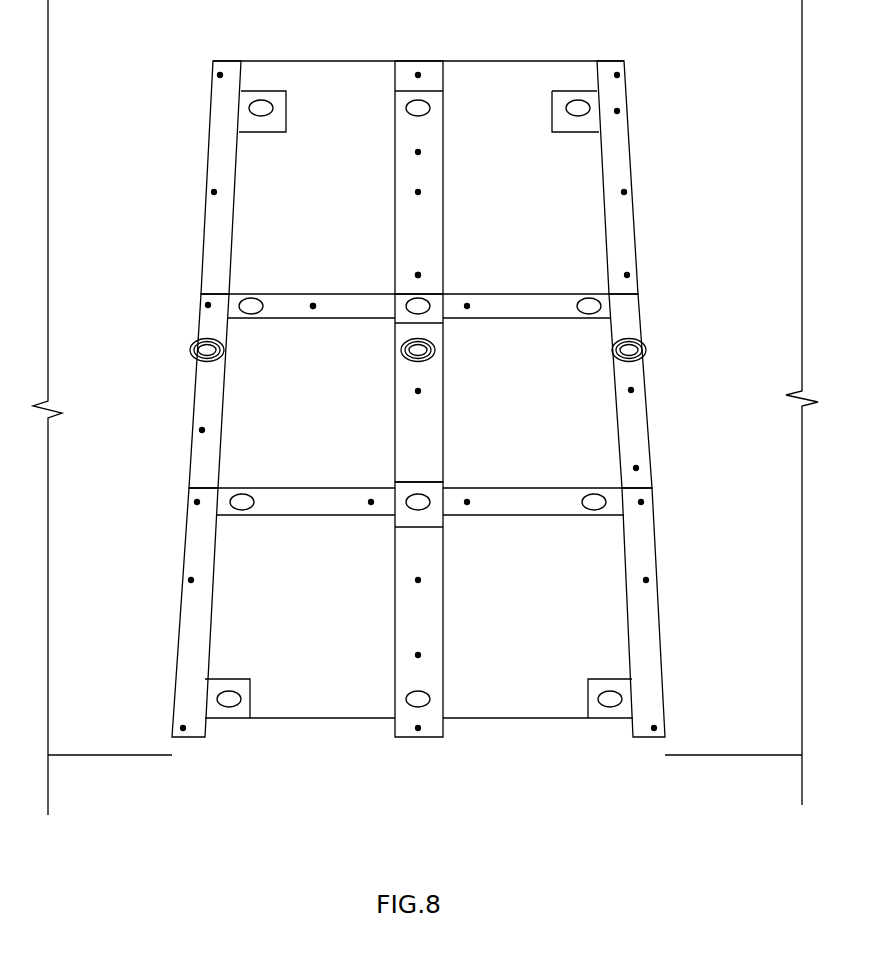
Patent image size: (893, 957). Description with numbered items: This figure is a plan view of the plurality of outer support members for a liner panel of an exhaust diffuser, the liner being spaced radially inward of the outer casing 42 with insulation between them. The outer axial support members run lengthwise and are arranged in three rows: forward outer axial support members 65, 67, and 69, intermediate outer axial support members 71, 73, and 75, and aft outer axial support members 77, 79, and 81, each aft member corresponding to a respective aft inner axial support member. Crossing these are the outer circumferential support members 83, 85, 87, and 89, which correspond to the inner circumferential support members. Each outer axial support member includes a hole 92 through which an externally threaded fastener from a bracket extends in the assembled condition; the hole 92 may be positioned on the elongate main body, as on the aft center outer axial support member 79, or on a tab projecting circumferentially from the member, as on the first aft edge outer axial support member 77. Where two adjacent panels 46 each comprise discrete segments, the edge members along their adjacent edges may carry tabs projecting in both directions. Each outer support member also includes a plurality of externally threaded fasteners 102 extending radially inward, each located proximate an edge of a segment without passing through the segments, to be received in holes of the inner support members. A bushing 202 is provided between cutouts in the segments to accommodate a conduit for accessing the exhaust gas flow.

The outer casing 42 is at (496, 103).
The panels 46 is at (108, 331).
The forward outer axial support member 65 is at (222, 177).
The forward outer axial support member 67 is at (420, 193).
The forward outer axial support member 69 is at (607, 198).
The intermediate outer axial support member 71 is at (207, 404).
The intermediate outer axial support member 73 is at (423, 425).
The intermediate outer axial support member 75 is at (625, 422).
The first aft edge outer axial support member 77 is at (197, 605).
The aft center outer axial support member 79 is at (430, 633).
The aft outer axial support member 81 is at (640, 620).
The outer circumferential support member 83 is at (290, 308).
The outer circumferential support member 85 is at (565, 308).
The outer circumferential support member 87 is at (275, 505).
The outer circumferential support member 89 is at (540, 502).
The hole 92 is at (261, 116).
The externally threaded fastener 102 is at (420, 274).
The bushing 202 is at (196, 358).